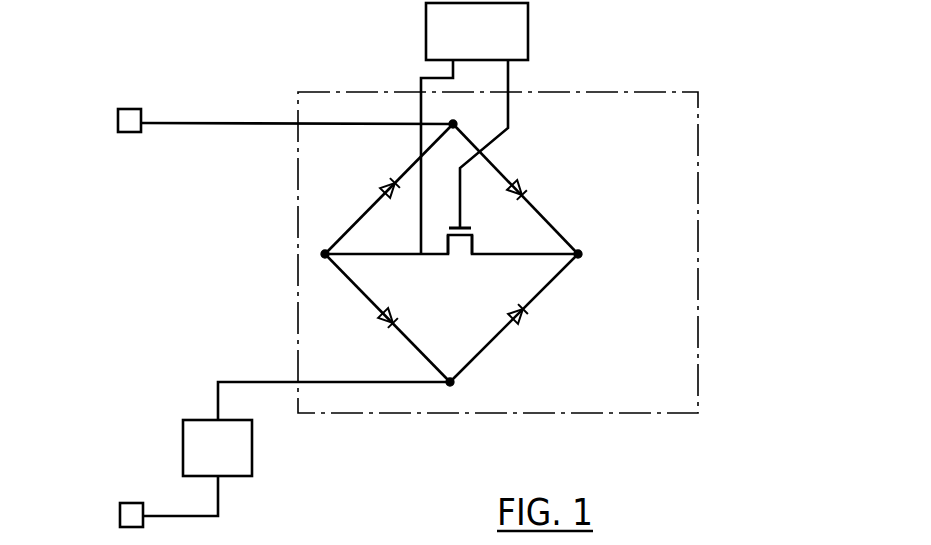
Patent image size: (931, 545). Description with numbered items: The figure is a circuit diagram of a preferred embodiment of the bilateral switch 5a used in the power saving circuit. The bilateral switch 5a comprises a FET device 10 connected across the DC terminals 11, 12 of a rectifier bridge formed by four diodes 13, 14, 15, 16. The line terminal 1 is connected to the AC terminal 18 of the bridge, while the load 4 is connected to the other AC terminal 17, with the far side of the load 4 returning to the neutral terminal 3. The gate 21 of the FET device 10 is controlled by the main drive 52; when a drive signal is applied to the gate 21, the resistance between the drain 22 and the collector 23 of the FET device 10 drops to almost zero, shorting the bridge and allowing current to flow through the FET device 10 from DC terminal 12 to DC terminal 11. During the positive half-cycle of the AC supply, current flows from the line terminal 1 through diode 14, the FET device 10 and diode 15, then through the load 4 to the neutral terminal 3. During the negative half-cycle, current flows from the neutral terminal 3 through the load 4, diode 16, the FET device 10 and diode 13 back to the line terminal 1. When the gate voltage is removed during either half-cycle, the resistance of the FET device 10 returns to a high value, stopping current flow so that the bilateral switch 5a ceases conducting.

The line terminal 1 is at (138, 114).
The neutral terminal 3 is at (128, 503).
The load 4 is at (249, 462).
The bilateral switch 5a is at (298, 174).
The FET device 10 is at (512, 268).
The DC terminal 11 is at (324, 251).
The DC terminal 12 is at (582, 251).
The diode 13 is at (381, 180).
The diode 14 is at (526, 184).
The diode 15 is at (377, 320).
The diode 16 is at (528, 318).
The AC terminal 17 is at (454, 384).
The AC terminal 18 is at (456, 121).
The gate 21 is at (466, 227).
The drain 22 is at (473, 249).
The collector 23 is at (440, 243).
The main drive 52 is at (530, 40).